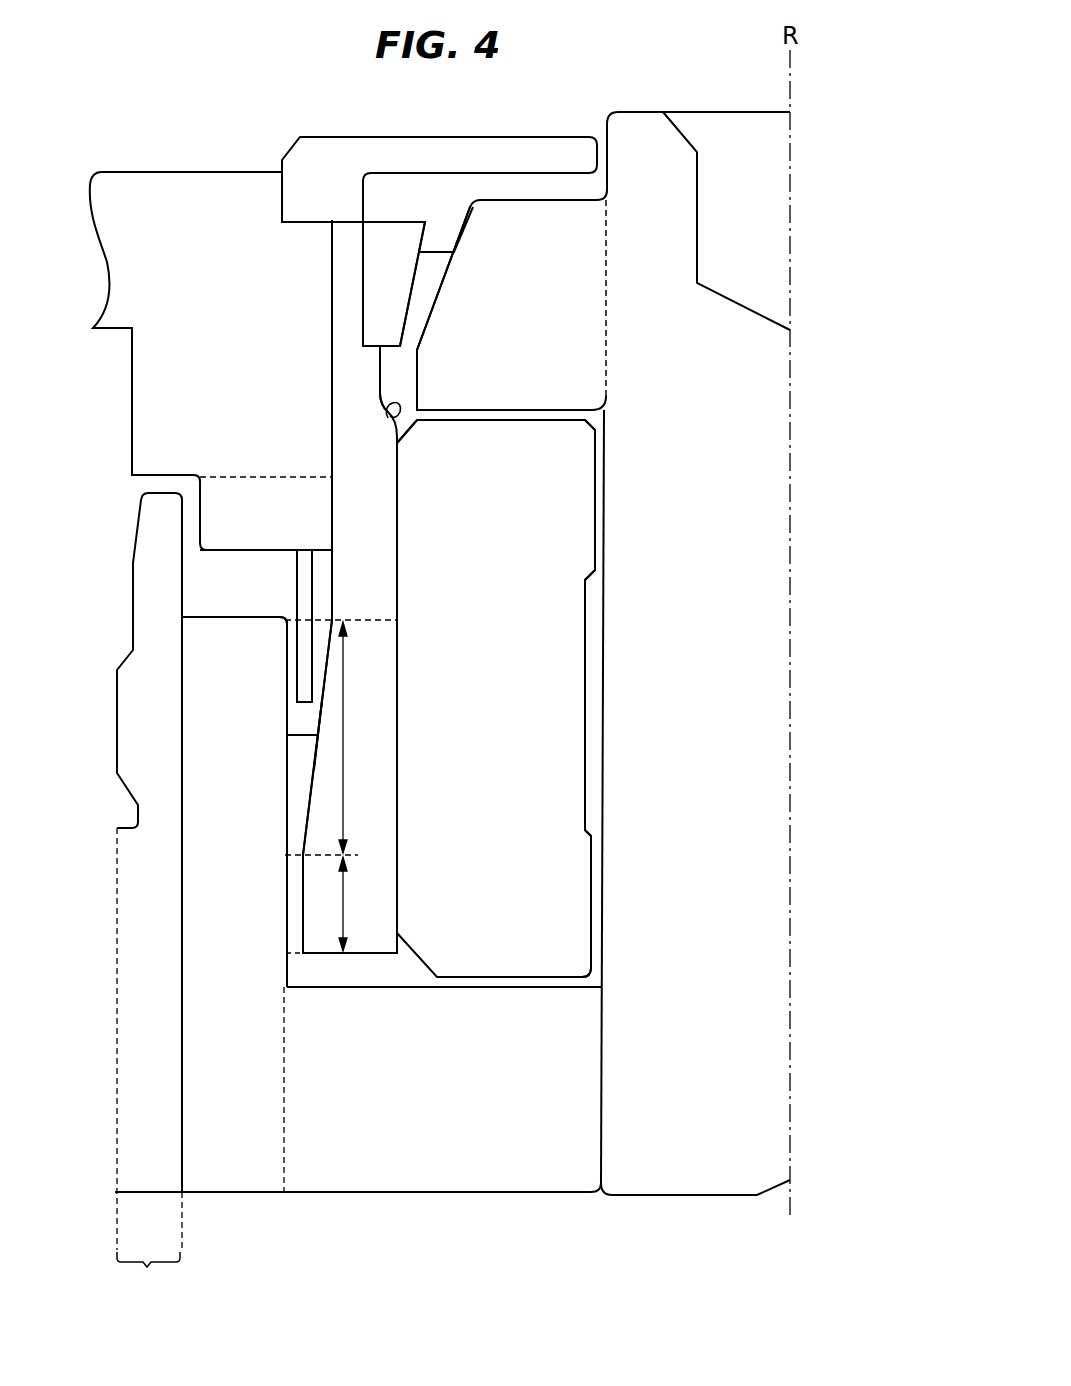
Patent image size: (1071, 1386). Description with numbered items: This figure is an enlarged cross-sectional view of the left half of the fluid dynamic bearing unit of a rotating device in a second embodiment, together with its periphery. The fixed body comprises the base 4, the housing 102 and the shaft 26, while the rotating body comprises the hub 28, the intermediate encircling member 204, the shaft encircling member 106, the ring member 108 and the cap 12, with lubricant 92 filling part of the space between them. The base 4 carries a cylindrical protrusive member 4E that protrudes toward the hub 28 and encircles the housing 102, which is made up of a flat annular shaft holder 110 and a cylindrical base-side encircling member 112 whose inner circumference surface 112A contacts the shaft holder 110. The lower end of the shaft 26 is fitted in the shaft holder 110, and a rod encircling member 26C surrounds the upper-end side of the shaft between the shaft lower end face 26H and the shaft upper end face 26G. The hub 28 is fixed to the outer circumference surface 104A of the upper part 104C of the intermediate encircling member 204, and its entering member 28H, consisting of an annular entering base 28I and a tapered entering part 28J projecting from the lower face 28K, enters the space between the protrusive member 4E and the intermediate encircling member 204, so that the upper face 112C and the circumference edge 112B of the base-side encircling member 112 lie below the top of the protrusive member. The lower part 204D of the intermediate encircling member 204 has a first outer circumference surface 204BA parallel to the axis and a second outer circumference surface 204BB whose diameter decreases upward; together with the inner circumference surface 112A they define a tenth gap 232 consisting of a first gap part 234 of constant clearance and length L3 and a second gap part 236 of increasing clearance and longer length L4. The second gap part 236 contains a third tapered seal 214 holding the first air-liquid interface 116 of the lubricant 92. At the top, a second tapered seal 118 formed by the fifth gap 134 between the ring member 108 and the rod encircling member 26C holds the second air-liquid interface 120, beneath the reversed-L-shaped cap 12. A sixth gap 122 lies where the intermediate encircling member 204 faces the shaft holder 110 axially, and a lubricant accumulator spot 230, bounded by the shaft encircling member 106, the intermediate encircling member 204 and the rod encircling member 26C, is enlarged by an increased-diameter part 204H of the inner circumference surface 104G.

The base 4 is at (130, 716).
The protrusive member 4E is at (148, 1278).
The cap 12 is at (322, 152).
The shaft 26 is at (735, 1180).
The rod encircling member 26C is at (588, 247).
The shaft upper end face 26G is at (632, 110).
The shaft lower end face 26H is at (668, 1198).
The hub 28 is at (120, 190).
The entering member 28H is at (222, 490).
The entering base 28I is at (318, 494).
The tapered entering part 28J is at (305, 570).
The lower face 28K is at (248, 556).
The lubricant 92 is at (604, 982).
The housing 102 is at (557, 1178).
The outer circumference surface 104A is at (330, 314).
The upper part 104C is at (392, 606).
The inner circumference surface 104G is at (402, 500).
The shaft encircling member 106 is at (560, 682).
The ring member 108 is at (396, 237).
The shaft holder 110 is at (330, 1178).
The base-side encircling member 112 is at (248, 1178).
The inner circumference surface 112A is at (304, 688).
The circumference edge 112B is at (286, 612).
The upper face 112C is at (214, 610).
The first air-liquid interface 116 is at (302, 730).
The second tapered seal 118 is at (425, 283).
The second air-liquid interface 120 is at (444, 250).
The sixth gap 122 is at (362, 972).
The fifth gap 134 is at (420, 309).
The intermediate encircling member 204 is at (345, 276).
The first outer circumference surface 204BA is at (306, 928).
The second outer circumference surface 204BB is at (310, 806).
The lower part 204D is at (392, 641).
The increased-diameter part 204H is at (388, 424).
The third tapered seal 214 is at (304, 714).
The lubricant accumulator spot 230 is at (395, 382).
The tenth gap 232 is at (304, 872).
The first gap part 234 is at (304, 899).
The second gap part 236 is at (312, 770).
The length L3 is at (346, 899).
The length L4 is at (346, 785).